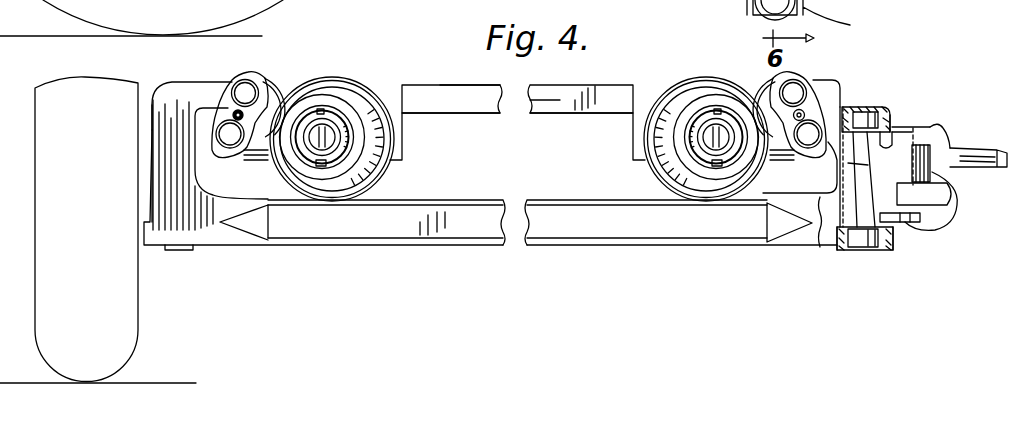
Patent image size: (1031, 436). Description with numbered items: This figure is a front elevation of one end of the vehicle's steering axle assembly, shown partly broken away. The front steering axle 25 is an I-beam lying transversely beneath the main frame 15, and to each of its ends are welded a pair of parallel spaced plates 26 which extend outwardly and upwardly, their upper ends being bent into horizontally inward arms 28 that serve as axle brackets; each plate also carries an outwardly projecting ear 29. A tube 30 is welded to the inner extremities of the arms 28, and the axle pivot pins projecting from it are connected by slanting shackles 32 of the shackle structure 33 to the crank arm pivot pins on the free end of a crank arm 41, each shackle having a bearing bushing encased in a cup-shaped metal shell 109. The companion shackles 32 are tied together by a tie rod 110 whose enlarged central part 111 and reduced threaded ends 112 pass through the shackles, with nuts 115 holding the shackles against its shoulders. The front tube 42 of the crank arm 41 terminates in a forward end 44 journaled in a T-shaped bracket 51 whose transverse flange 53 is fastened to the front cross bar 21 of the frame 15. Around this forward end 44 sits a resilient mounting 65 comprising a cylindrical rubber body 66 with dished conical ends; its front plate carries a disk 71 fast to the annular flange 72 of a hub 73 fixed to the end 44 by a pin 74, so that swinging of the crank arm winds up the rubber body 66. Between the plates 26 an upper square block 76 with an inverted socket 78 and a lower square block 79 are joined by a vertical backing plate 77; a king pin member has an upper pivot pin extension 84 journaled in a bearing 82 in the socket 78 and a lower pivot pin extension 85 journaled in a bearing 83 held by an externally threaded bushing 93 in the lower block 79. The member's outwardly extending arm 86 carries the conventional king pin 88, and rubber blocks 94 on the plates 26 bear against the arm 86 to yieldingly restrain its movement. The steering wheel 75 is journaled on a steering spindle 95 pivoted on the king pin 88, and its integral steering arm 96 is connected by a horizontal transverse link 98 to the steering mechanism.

The main frame 15 is at (543, 119).
The cross bar 21 is at (497, 92).
The front steering axle 25 is at (469, 246).
The plates 26 is at (243, 246).
The arms 28 is at (211, 82).
The ear 29 is at (151, 130).
The tube 30 is at (268, 80).
The shackles 32 is at (247, 79).
The shackle structure 33 is at (293, 82).
The crank arm 41 is at (243, 169).
The tube 42 is at (255, 162).
The forward end 44 is at (311, 148).
The bracket 51 is at (410, 86).
The transverse flange 53 is at (408, 118).
The roller 65 is at (361, 82).
The rubber body 66 is at (400, 154).
The disk 71 is at (372, 165).
The annular flange 72 is at (680, 162).
The hub 73 is at (333, 148).
The pin 74 is at (712, 150).
The steering wheel 75 is at (86, 229).
The square block 76 is at (888, 113).
The vertical backing plate 77 is at (846, 197).
The inverted cylindrical socket 78 is at (880, 108).
The square block 79 is at (810, 224).
The bearing 82 is at (866, 100).
The bearing 83 is at (888, 256).
The upper pivot pin extension 84 is at (871, 148).
The lower pivot pin extension 85 is at (867, 250).
The arm 86 is at (930, 167).
The king pin 88 is at (931, 118).
The externally threaded metal bushing 93 is at (846, 251).
The rubber blocks 94 is at (752, 6).
The steering spindle 95 is at (959, 141).
The steering arm 96 is at (952, 217).
The horizontal transverse link 98 is at (893, 222).
The cup-shaped metal shell 109 is at (232, 142).
The tie rod 110 is at (268, 118).
The enlarged central part 111 is at (776, 115).
The reduced threaded ends 112 is at (798, 122).
The nuts 115 is at (236, 113).